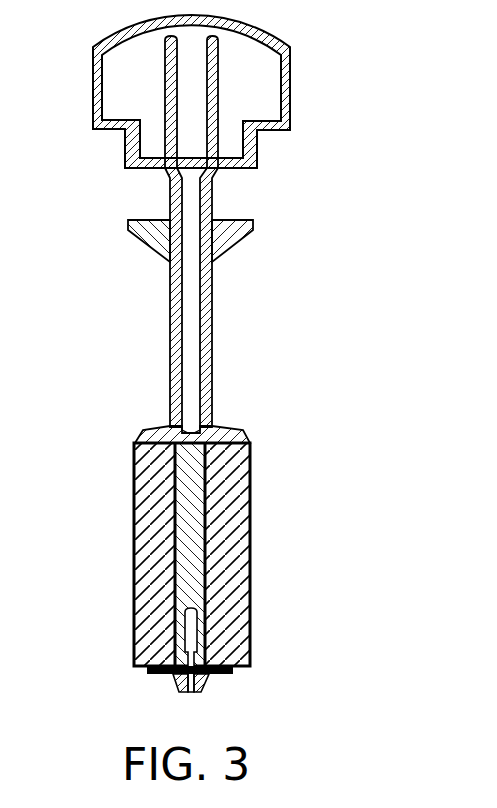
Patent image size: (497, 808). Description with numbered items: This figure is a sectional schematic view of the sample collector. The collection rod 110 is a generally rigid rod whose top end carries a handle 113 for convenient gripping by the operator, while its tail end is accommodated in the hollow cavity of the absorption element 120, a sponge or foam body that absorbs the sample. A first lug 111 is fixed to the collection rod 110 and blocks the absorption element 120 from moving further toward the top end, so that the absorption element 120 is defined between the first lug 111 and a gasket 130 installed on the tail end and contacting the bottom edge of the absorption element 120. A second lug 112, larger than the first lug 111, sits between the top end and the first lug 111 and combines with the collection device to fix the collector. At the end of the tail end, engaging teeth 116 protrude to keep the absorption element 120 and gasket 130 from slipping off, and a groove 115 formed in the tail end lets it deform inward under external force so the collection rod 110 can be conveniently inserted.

The collection rod 110 is at (212, 315).
The first lug 111 is at (212, 427).
The second lug 112 is at (253, 222).
The handle 113 is at (257, 92).
The groove 115 is at (135, 662).
The engaging teeth 116 is at (210, 683).
The absorption element 120 is at (150, 537).
The gasket 130 is at (233, 665).